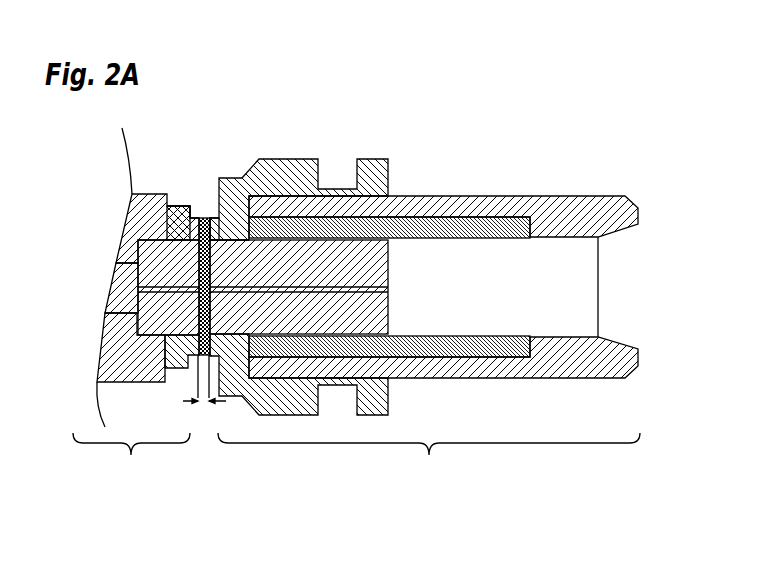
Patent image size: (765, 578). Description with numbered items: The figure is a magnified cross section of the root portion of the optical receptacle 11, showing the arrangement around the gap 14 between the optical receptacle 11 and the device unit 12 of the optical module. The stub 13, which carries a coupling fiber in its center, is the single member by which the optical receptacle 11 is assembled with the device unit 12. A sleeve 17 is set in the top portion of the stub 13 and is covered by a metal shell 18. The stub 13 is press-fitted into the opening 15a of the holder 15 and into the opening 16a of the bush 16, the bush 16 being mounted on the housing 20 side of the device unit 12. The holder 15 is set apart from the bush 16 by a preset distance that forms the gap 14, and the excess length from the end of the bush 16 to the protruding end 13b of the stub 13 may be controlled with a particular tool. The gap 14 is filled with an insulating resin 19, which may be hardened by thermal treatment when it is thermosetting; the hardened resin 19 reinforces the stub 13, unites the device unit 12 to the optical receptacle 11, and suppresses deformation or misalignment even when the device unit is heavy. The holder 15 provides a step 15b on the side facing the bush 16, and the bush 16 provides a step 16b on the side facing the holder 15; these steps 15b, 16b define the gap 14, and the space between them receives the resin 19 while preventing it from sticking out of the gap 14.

The optical receptacle 11 is at (429, 461).
The device unit 12 is at (131, 309).
The stub 13 is at (387, 316).
The end of the stub 13b is at (118, 264).
The gap 14 is at (202, 402).
The holder 15 is at (273, 158).
The opening of the holder 15a is at (233, 240).
The step 15b is at (213, 218).
The bush 16 is at (130, 207).
The opening of the bush 16a is at (168, 287).
The step 16b is at (190, 217).
The sleeve 17 is at (443, 233).
The metal shell 18 is at (545, 196).
The resin 19 is at (198, 360).
The housing 20 is at (112, 353).